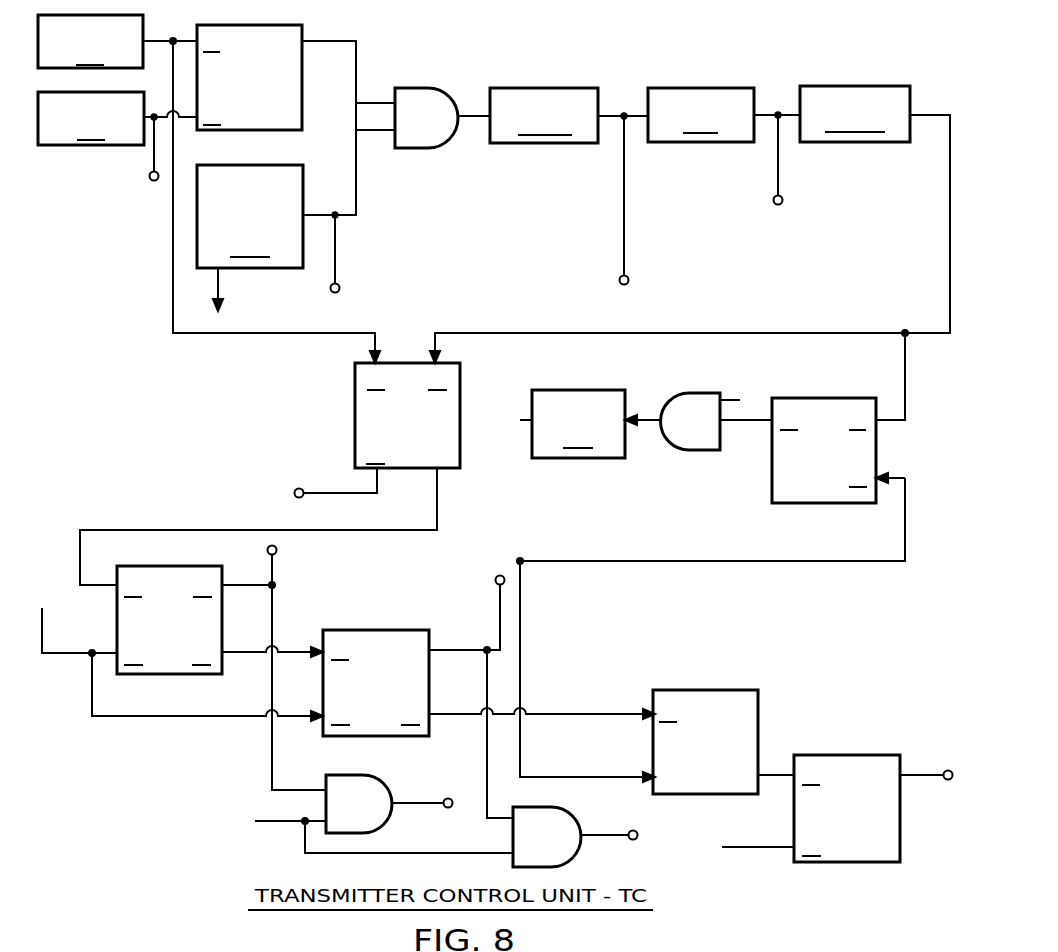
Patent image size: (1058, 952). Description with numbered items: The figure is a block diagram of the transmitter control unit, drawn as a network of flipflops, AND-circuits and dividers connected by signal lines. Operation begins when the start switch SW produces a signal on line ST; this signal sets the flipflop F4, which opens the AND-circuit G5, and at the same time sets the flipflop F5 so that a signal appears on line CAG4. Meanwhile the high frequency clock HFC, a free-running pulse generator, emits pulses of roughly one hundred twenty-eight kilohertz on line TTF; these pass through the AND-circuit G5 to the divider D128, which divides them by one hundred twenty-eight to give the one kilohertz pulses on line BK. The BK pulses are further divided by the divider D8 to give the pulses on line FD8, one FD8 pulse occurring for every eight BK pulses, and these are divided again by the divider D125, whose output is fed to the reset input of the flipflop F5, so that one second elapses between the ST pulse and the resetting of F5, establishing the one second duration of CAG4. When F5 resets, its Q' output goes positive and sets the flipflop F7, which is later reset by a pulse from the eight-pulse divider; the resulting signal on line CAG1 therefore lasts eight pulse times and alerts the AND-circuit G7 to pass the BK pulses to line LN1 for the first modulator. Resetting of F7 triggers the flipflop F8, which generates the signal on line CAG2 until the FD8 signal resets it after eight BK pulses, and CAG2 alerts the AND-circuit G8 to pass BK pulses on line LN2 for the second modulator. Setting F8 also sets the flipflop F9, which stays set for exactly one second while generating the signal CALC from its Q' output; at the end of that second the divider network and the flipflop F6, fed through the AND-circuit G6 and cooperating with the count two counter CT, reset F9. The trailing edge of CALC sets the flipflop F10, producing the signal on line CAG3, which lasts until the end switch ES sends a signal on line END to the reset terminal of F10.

The start switch SW is at (90, 41).
The end switch ES is at (91, 118).
The line ST is at (154, 40).
The line END is at (153, 157).
The flipflop F4 is at (293, 86).
The high frequency clock HFC is at (250, 216).
The line TTF is at (343, 246).
The AND-circuit G5 is at (427, 98).
The divider D128 is at (544, 115).
The divider D8 is at (701, 115).
The divider D125 is at (855, 114).
The line BK is at (624, 237).
The line FD8 is at (778, 174).
The flipflop F5 is at (452, 408).
The line CAG4 is at (322, 492).
The count two counter CT is at (578, 424).
The AND-circuit G6 is at (686, 400).
The flipflop F6 is at (830, 398).
The flipflop F7 is at (205, 614).
The line CAG1 is at (275, 563).
The flipflop F8 is at (383, 640).
The line CAG2 is at (498, 613).
The AND-circuit G7 is at (368, 792).
The line LN1 is at (424, 801).
The AND-circuit G8 is at (563, 827).
The line LN2 is at (607, 836).
The flipflop F9 is at (707, 693).
The signal CALC is at (773, 773).
The flipflop F10 is at (845, 762).
The line CAG3 is at (925, 773).